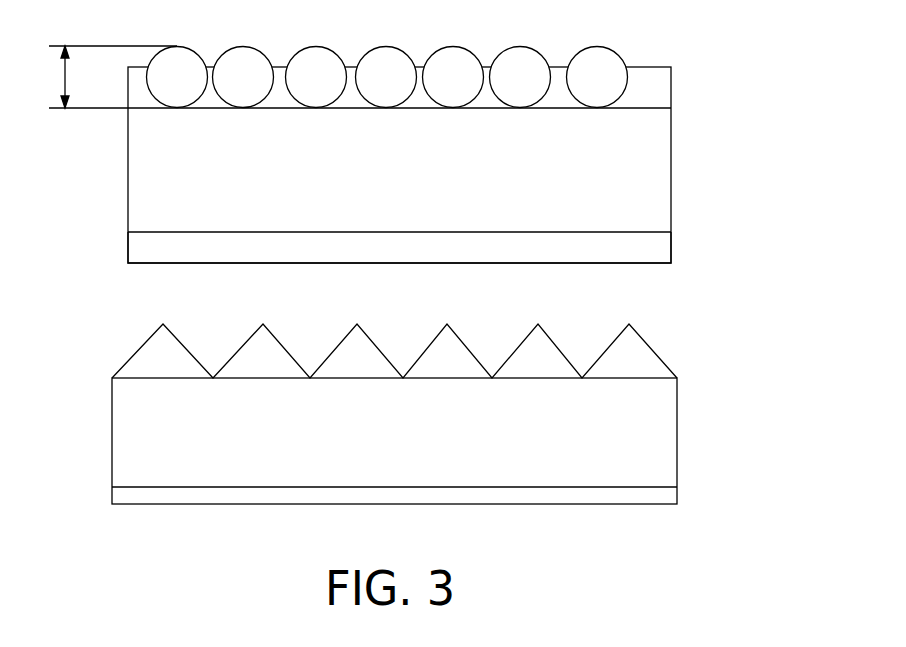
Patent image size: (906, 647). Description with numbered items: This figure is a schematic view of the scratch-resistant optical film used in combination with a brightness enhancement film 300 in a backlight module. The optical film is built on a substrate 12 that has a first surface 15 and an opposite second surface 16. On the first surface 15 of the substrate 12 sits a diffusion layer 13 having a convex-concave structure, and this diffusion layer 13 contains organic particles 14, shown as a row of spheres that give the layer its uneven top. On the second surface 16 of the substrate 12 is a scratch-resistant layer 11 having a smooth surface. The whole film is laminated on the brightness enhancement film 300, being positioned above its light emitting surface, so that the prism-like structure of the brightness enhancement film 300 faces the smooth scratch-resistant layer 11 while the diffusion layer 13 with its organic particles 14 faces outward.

The scratch-resistant layer 11 is at (671, 248).
The substrate 12 is at (671, 168).
The diffusion layer 13 is at (103, 77).
The organic particles 14 is at (608, 58).
The first surface 15 is at (671, 108).
The second surface 16 is at (671, 231).
The brightness enhancement film 300 is at (660, 434).